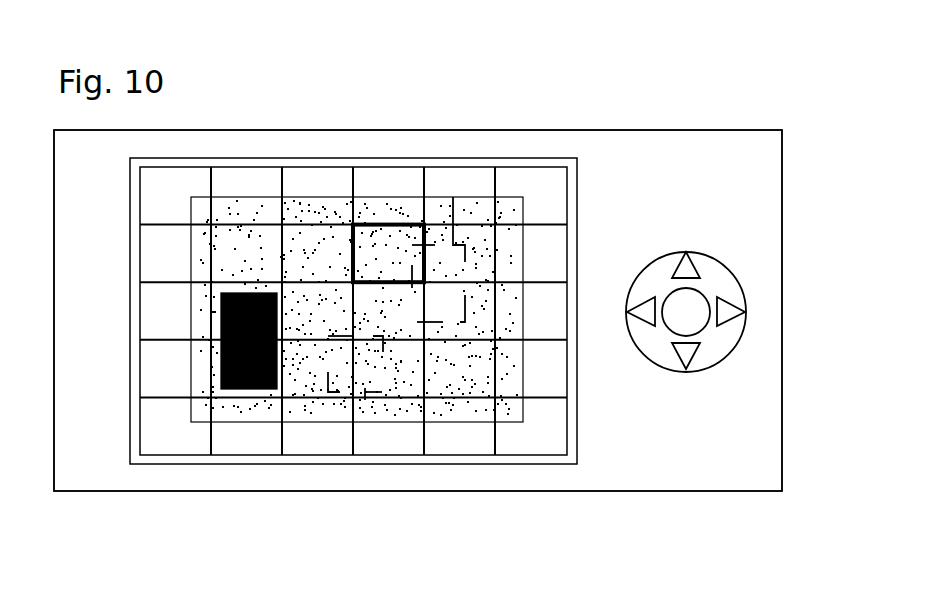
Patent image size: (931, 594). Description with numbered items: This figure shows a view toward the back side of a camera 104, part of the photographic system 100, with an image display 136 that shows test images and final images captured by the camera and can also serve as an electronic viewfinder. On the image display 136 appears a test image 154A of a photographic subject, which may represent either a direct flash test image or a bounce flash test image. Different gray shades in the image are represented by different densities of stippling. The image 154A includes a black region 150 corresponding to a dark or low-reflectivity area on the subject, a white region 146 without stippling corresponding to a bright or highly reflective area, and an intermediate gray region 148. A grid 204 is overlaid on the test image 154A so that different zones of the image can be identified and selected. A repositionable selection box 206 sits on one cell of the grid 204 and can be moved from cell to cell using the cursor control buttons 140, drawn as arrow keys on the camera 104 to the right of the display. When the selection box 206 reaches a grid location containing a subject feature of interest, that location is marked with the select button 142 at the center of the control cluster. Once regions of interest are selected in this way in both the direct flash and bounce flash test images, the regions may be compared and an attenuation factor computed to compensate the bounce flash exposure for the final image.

The medical device / system 100 is at (600, 76).
The camera 104 is at (765, 172).
The image display 136 is at (193, 157).
The grid 204 is at (283, 182).
The repositionable selection box 206 is at (412, 222).
The white region 146 is at (453, 243).
The intermediate gray region 148 is at (367, 392).
The black region 150 is at (248, 389).
The image 154A is at (463, 422).
The cursor control buttons 140 is at (695, 268).
The select button 142 is at (702, 290).